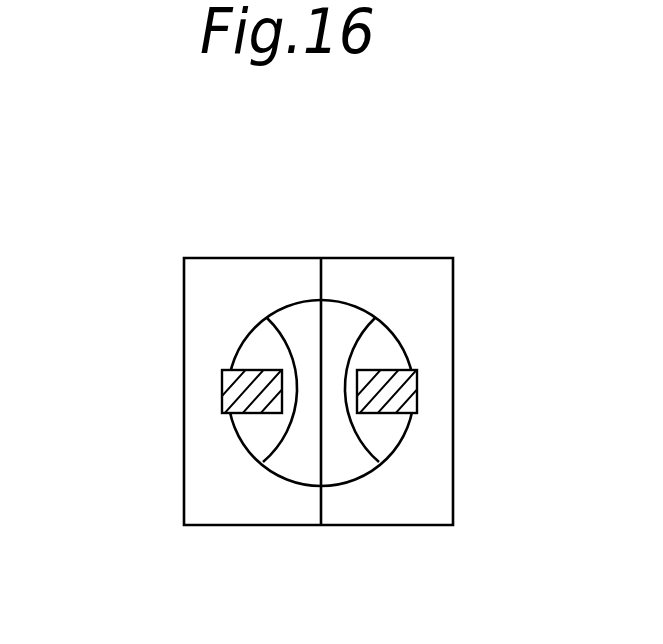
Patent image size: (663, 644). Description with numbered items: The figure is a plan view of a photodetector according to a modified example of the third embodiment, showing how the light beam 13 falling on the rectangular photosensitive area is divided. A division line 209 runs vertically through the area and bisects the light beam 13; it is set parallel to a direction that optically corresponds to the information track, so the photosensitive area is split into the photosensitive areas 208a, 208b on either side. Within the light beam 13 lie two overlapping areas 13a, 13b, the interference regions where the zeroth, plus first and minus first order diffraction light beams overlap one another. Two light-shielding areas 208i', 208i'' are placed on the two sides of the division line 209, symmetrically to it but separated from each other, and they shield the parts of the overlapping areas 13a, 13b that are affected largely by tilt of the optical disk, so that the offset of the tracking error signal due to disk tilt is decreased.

The light beam 13 is at (290, 302).
The overlapping area 13a is at (268, 437).
The overlapping area 13b is at (372, 435).
The photosensitive area 208a is at (238, 298).
The photosensitive area 208b is at (387, 282).
The light-shielding area 208i' is at (174, 390).
The light-shielding area 208i'' is at (462, 390).
The division line 209 is at (318, 258).